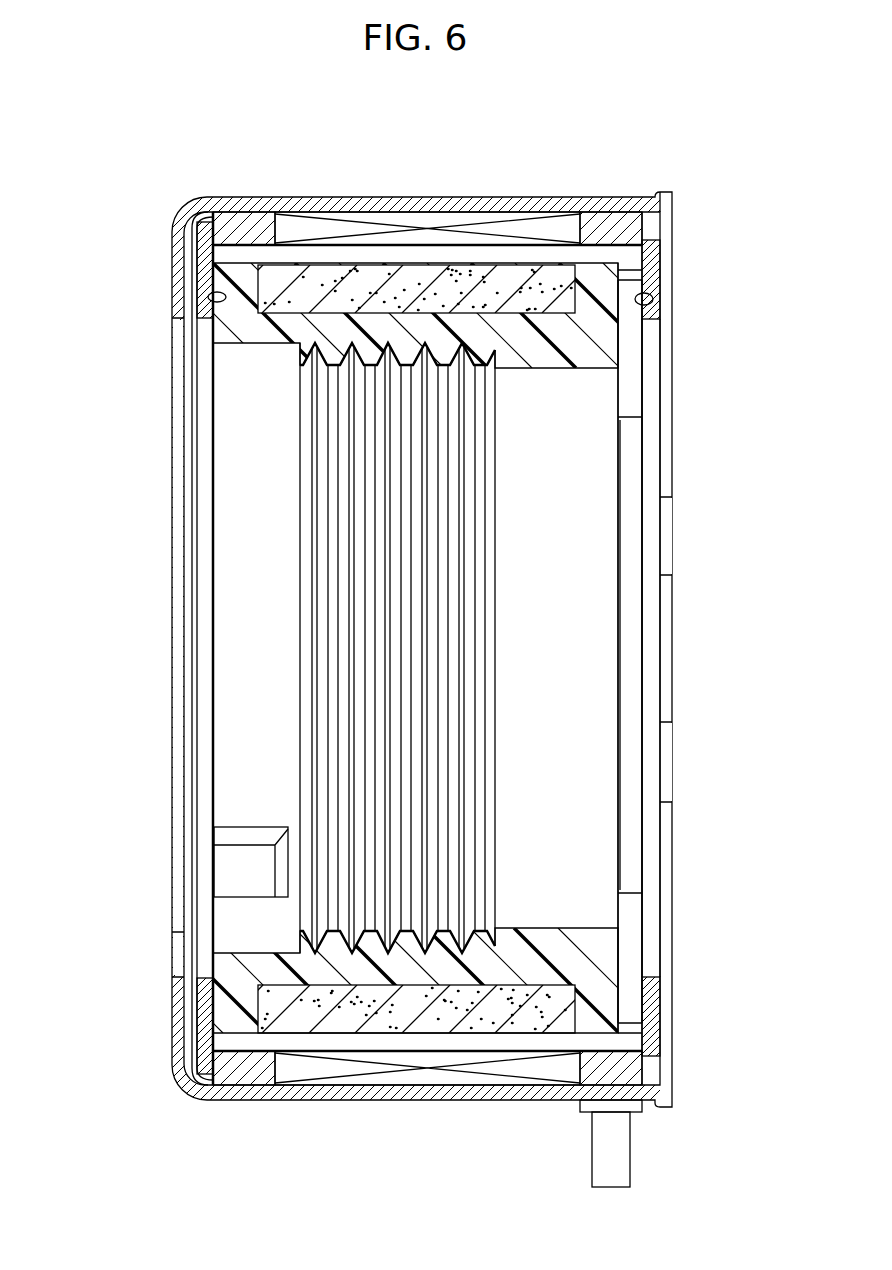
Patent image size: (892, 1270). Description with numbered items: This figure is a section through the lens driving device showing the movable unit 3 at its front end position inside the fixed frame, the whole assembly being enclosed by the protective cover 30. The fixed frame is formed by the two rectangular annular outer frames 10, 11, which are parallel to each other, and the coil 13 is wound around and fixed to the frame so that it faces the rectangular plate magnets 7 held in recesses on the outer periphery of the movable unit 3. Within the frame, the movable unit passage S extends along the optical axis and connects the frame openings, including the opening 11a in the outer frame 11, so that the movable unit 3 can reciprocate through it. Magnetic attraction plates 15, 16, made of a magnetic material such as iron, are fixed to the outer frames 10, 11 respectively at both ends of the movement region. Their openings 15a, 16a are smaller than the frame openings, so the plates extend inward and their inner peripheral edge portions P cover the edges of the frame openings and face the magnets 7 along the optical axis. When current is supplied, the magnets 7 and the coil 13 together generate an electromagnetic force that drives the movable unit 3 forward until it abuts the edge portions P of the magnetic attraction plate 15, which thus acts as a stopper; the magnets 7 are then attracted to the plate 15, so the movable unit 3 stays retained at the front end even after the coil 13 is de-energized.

The movable unit 3 is at (577, 358).
The magnet 7 is at (533, 297).
The outer frame 10 is at (240, 222).
The outer frame 11 is at (620, 222).
The opening 11a is at (628, 535).
The coil 13 is at (497, 228).
The magnetic attraction plate 15 is at (205, 243).
The opening 15a is at (205, 449).
The magnetic attraction plate 16 is at (653, 262).
The opening 16a is at (653, 362).
The cover 30 is at (377, 200).
The inner peripheral edge portion P is at (208, 297).
The movable unit passage S is at (628, 652).